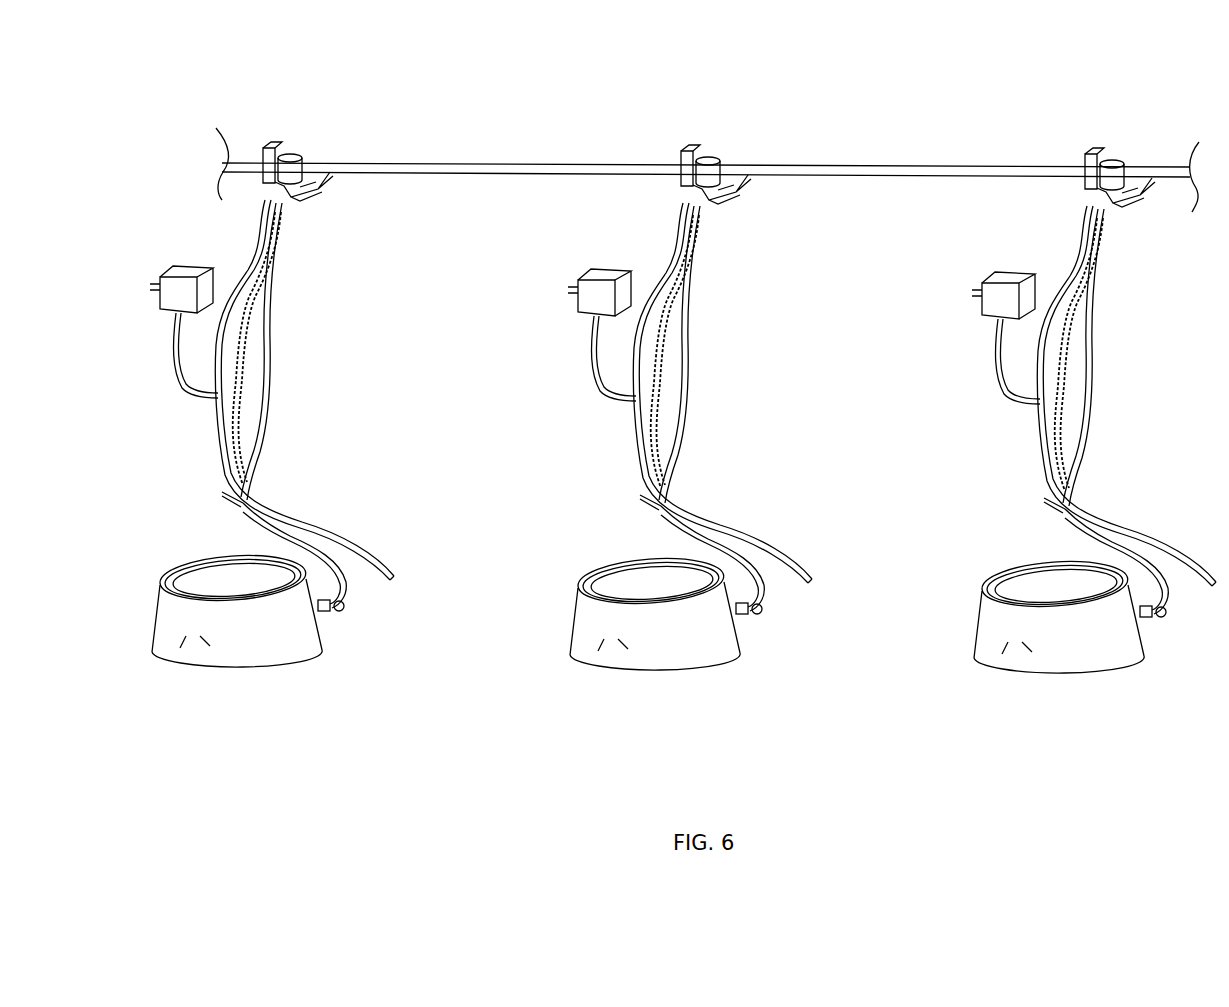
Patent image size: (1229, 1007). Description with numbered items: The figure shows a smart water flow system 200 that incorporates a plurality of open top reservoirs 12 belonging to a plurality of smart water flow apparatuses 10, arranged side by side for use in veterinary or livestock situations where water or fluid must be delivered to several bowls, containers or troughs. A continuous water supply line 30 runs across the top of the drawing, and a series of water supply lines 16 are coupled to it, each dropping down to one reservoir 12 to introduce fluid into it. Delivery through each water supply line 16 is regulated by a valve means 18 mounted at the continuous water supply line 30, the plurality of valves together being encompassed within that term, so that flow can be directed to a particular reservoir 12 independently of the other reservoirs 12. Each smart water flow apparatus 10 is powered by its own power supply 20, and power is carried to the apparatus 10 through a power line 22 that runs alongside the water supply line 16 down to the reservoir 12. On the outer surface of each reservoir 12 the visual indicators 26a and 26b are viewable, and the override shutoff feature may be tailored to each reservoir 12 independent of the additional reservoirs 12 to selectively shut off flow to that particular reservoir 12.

The smart water flow system 200 is at (578, 51).
The continuous water supply line 30 is at (504, 166).
The valve means 18 is at (292, 155).
The power supply 20 is at (163, 280).
The water supply line 16 is at (223, 417).
The power line 22 is at (266, 403).
The smart water flow apparatus 10 is at (654, 663).
The reservoir 12 is at (275, 630).
The visual indicator 26a is at (203, 638).
The visual indicator 26b is at (1028, 699).